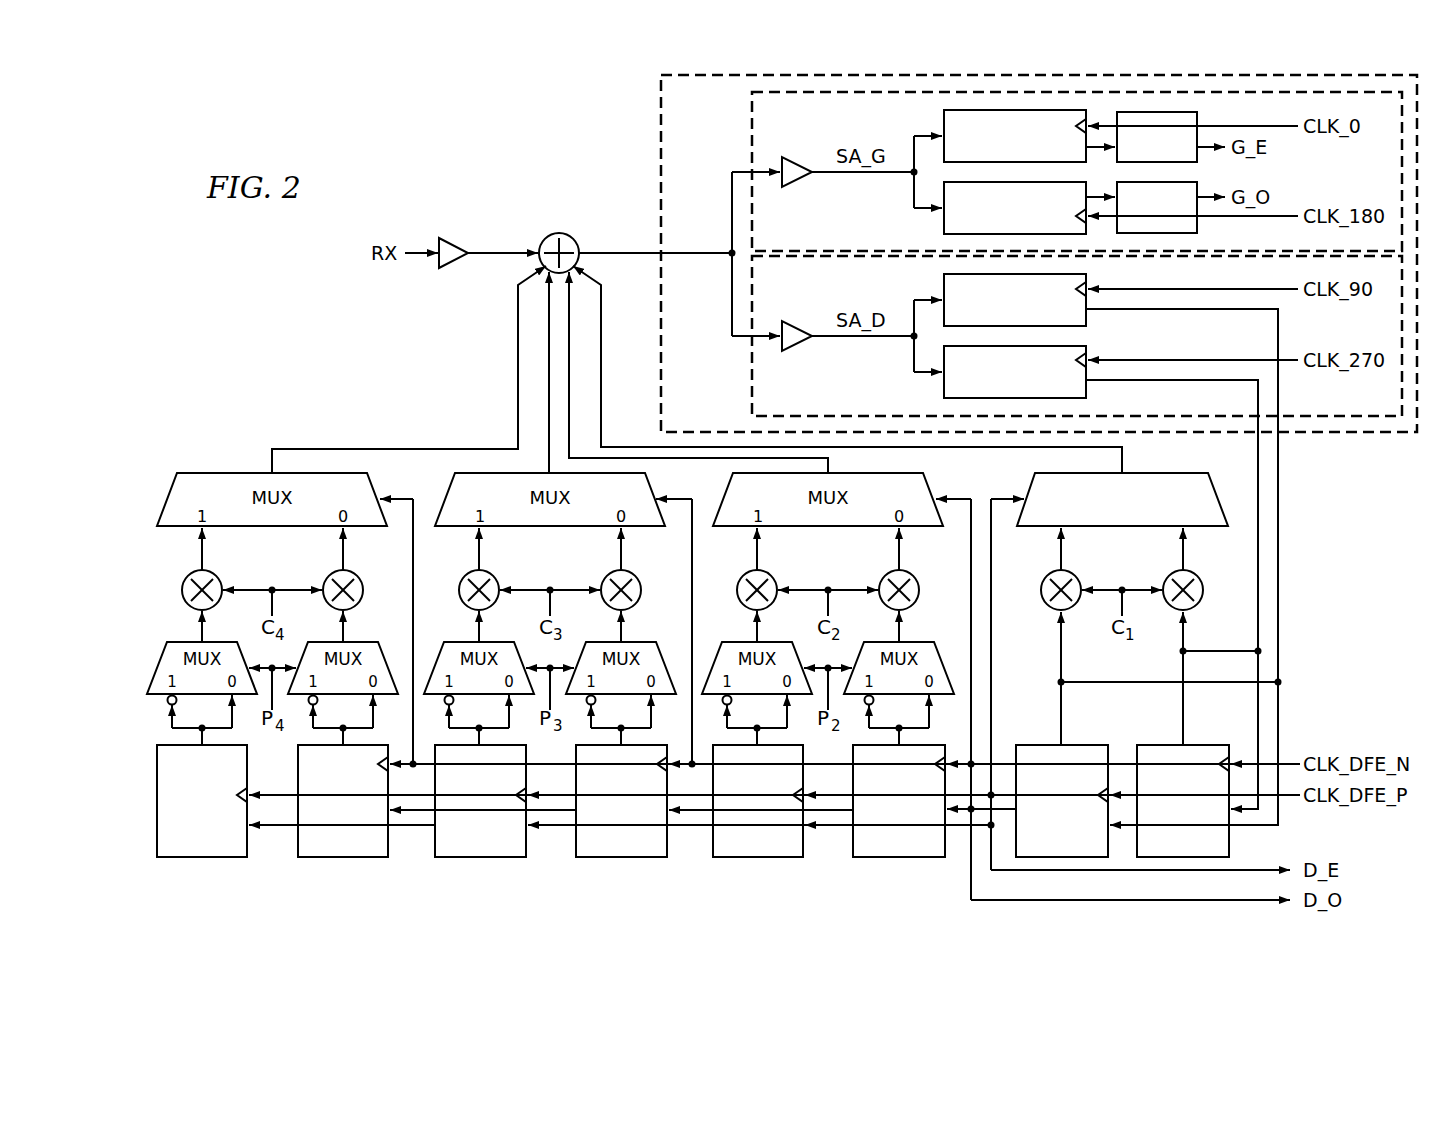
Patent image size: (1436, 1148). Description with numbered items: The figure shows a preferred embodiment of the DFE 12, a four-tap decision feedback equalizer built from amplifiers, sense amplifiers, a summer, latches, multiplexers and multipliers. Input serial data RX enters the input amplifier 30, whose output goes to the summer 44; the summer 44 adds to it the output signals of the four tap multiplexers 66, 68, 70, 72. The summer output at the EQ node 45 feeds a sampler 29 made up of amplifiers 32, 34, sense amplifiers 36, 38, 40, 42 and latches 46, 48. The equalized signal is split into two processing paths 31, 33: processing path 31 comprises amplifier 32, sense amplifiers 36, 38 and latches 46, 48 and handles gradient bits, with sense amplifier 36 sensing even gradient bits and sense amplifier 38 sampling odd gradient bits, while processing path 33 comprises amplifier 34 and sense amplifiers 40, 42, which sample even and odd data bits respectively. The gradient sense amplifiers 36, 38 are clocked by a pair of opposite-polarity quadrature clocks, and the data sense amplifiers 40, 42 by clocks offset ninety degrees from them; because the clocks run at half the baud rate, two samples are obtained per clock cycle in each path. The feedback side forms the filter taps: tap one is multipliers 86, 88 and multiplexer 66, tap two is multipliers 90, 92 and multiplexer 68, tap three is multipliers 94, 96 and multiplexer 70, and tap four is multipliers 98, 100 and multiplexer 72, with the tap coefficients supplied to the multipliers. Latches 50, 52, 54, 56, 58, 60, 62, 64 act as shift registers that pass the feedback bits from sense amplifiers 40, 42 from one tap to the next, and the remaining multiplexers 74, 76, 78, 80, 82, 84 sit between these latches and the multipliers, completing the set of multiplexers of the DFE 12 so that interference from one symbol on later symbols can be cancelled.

The DFE 12 is at (425, 152).
The sampler 29 is at (660, 158).
The input amplifier 30 is at (455, 262).
The processing path 31 is at (750, 130).
The amplifier 32 is at (797, 180).
The processing path 33 is at (750, 385).
The amplifier 34 is at (797, 344).
The sense amplifier 36 is at (944, 125).
The sense amplifier 38 is at (944, 218).
The sense amplifier 40 is at (944, 289).
The sense amplifier 42 is at (944, 384).
The summer 44 is at (547, 239).
The EQ node 45 is at (718, 257).
The latch 46 is at (1197, 120).
The latch 48 is at (1197, 226).
The latch 50 is at (1203, 744).
The latch 52 is at (1040, 744).
The latch 54 is at (910, 858).
The latch 56 is at (768, 858).
The latch 58 is at (611, 858).
The latch 60 is at (470, 858).
The latch 62 is at (333, 858).
The latch 64 is at (192, 858).
The multiplexer 66 is at (1133, 527).
The multiplexer 68 is at (820, 527).
The multiplexer 70 is at (540, 527).
The multiplexer 72 is at (228, 473).
The multiplexer 74 is at (924, 641).
The multiplexer 76 is at (732, 641).
The multiplexer 78 is at (646, 641).
The multiplexer 80 is at (454, 641).
The multiplexer 82 is at (368, 641).
The multiplexer 84 is at (177, 641).
The multiplier 86 is at (1195, 576).
The multiplier 88 is at (1045, 576).
The multiplier 90 is at (911, 576).
The multiplier 92 is at (745, 576).
The multiplier 94 is at (633, 576).
The multiplier 96 is at (467, 576).
The multiplier 98 is at (354, 576).
The multiplier 100 is at (190, 576).